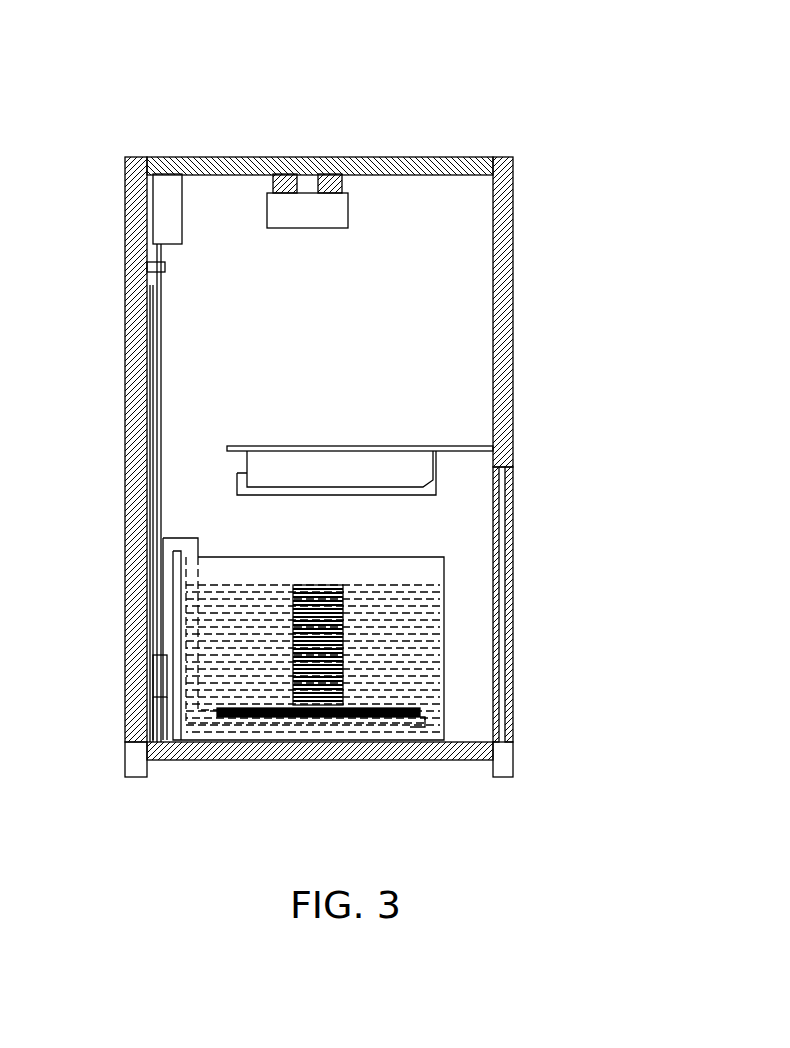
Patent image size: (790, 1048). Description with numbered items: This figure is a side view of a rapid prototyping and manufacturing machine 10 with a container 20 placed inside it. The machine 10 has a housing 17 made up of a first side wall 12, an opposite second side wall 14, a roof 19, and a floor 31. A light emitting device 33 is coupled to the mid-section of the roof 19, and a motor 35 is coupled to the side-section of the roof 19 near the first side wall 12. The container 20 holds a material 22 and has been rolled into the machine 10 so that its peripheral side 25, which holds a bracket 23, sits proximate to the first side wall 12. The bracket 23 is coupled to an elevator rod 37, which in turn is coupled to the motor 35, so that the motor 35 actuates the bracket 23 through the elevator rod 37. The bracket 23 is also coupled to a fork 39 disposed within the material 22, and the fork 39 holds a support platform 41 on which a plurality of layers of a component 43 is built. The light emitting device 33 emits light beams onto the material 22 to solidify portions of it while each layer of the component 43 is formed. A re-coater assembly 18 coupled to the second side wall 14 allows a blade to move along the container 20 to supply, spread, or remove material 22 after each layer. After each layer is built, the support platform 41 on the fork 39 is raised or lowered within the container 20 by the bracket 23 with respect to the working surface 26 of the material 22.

The rapid prototyping and manufacturing machine 10 is at (573, 58).
The first side wall 12 is at (127, 377).
The second side wall 14 is at (513, 193).
The housing 17 is at (514, 155).
The re-coater assembly 18 is at (330, 447).
The roof 19 is at (395, 160).
The container 20 is at (452, 652).
The material 22 is at (435, 678).
The bracket 23 is at (180, 538).
The peripheral side 25 is at (173, 658).
The working surface 26 is at (259, 586).
The floor 31 is at (328, 761).
The light emitting device 33 is at (327, 222).
The motor 35 is at (175, 221).
The elevator rod 37 is at (162, 315).
The fork 39 is at (225, 722).
The support platform 41 is at (392, 717).
The component 43 is at (343, 652).